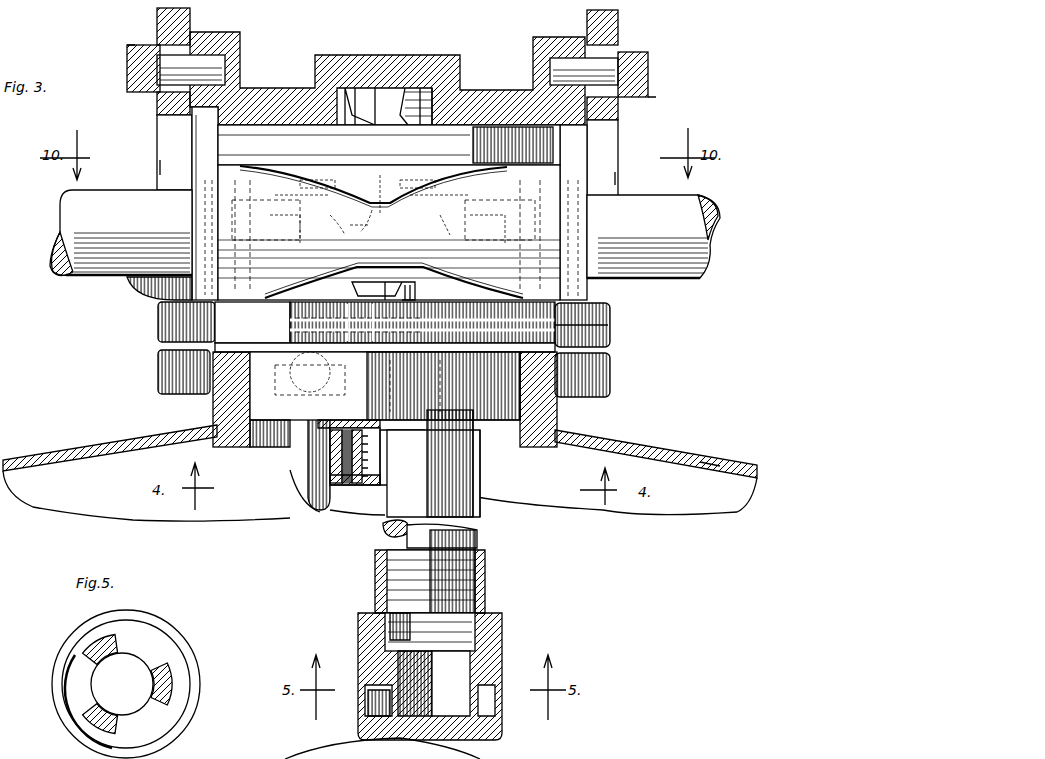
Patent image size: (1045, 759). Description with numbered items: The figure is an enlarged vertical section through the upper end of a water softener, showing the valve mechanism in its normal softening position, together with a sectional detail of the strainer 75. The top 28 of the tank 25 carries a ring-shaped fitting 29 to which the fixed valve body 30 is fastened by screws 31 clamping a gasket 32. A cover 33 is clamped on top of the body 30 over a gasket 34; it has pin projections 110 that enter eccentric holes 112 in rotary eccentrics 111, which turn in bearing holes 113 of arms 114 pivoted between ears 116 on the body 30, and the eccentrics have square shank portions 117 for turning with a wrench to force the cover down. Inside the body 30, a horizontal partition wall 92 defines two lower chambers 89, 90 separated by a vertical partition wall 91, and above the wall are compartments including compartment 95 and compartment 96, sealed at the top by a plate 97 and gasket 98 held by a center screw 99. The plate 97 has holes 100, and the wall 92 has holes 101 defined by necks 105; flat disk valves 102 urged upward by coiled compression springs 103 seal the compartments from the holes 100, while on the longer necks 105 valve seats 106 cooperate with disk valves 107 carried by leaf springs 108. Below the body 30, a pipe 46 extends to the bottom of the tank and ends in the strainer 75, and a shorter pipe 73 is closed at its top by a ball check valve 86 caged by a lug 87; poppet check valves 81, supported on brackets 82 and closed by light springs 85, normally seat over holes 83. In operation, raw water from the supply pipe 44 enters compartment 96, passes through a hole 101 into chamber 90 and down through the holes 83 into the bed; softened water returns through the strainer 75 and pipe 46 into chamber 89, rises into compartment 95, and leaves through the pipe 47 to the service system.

In FIG. 3, the tank 25 is at (708, 460).
In FIG. 3, the top of the tank 28 is at (625, 445).
In FIG. 3, the ring-shaped fitting 29 is at (548, 420).
In FIG. 3, the fixed valve body 30 is at (612, 328).
In FIG. 3, the screws 31 is at (385, 290).
In FIG. 3, the gasket 32 is at (612, 374).
In FIG. 3, the cover 33 is at (485, 97).
In FIG. 3, the gasket 34 is at (620, 146).
In FIG. 3, the supply pipe 44 is at (96, 262).
In FIG. 3, the pipe 46 is at (478, 535).
In FIG. 3, the pipe 47 is at (668, 280).
In FIG. 3, the pipe 73 is at (285, 495).
In FIG. 3, the strainer 75 is at (505, 652).
In FIG. 5, the strainer 75 is at (162, 650).
In FIG. 3, the check valves 81 is at (385, 399).
In FIG. 3, the brackets 82 is at (433, 463).
In FIG. 3, the holes 83 is at (388, 408).
In FIG. 3, the springs 85 is at (330, 458).
In FIG. 3, the ball check valve 86 is at (244, 399).
In FIG. 3, the lug 87 is at (385, 327).
In FIG. 3, the chamber 89 is at (612, 312).
In FIG. 3, the chamber 90 is at (252, 322).
In FIG. 3, the vertical partition wall 91 is at (371, 289).
In FIG. 3, the horizontal partition wall 92 is at (205, 324).
In FIG. 3, the compartment 95 is at (575, 175).
In FIG. 3, the compartment 96 is at (205, 203).
In FIG. 3, the plate 97 is at (230, 137).
In FIG. 3, the gasket 98 is at (389, 217).
In FIG. 3, the screw 99 is at (385, 100).
In FIG. 3, the holes 100 is at (290, 142).
In FIG. 3, the holes 101 is at (382, 224).
In FIG. 3, the disk valves 102 is at (388, 195).
In FIG. 3, the coiled compression springs 103 is at (350, 237).
In FIG. 3, the necks 105 is at (376, 232).
In FIG. 3, the valve seats 106 is at (388, 222).
In FIG. 3, the disk valves 107 is at (382, 200).
In FIG. 3, the leaf springs 108 is at (310, 178).
In FIG. 3, the pin projections 110 is at (205, 65).
In FIG. 3, the eccentrics 111 is at (162, 30).
In FIG. 3, the eccentric holes 112 is at (145, 70).
In FIG. 3, the bearing holes 113 is at (162, 108).
In FIG. 3, the arms 114 is at (162, 162).
In FIG. 3, the ears 116 is at (168, 292).
In FIG. 3, the square shank portions 117 is at (132, 46).